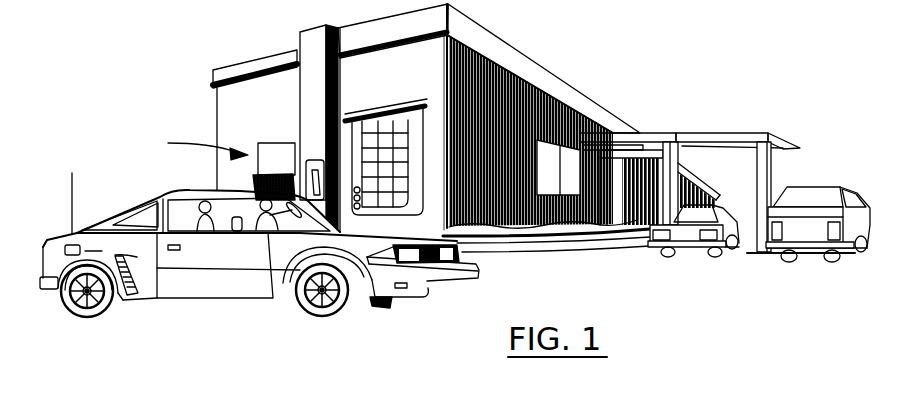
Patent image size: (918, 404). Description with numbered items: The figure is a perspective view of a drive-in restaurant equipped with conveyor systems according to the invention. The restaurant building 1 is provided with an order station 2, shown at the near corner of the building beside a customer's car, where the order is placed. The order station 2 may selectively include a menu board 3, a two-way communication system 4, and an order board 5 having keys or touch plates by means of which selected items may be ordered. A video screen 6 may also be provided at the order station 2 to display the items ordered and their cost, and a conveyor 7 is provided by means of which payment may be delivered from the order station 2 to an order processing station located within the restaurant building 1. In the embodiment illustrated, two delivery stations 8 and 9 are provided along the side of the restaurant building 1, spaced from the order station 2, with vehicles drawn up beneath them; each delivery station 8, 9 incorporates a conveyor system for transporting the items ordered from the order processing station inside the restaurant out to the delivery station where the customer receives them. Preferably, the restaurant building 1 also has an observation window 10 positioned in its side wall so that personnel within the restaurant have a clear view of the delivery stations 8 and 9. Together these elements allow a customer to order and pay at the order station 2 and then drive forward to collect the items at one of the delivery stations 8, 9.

The restaurant building 1 is at (511, 57).
The order station 2 is at (198, 144).
The menu board 3 is at (420, 138).
The two-way communication system 4 is at (357, 187).
The order board 5 is at (256, 181).
The video screen 6 is at (280, 152).
The conveyor 7 is at (310, 50).
The delivery station 8 is at (680, 165).
The delivery station 9 is at (778, 172).
The observation window 10 is at (578, 112).